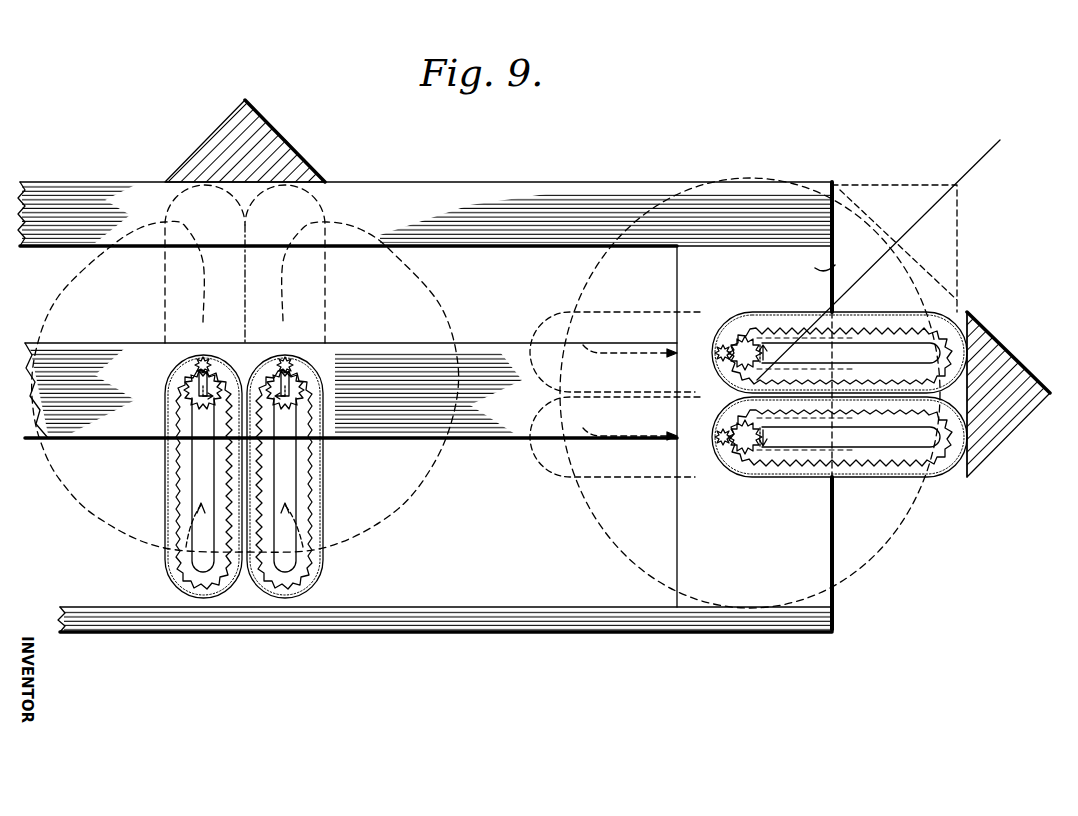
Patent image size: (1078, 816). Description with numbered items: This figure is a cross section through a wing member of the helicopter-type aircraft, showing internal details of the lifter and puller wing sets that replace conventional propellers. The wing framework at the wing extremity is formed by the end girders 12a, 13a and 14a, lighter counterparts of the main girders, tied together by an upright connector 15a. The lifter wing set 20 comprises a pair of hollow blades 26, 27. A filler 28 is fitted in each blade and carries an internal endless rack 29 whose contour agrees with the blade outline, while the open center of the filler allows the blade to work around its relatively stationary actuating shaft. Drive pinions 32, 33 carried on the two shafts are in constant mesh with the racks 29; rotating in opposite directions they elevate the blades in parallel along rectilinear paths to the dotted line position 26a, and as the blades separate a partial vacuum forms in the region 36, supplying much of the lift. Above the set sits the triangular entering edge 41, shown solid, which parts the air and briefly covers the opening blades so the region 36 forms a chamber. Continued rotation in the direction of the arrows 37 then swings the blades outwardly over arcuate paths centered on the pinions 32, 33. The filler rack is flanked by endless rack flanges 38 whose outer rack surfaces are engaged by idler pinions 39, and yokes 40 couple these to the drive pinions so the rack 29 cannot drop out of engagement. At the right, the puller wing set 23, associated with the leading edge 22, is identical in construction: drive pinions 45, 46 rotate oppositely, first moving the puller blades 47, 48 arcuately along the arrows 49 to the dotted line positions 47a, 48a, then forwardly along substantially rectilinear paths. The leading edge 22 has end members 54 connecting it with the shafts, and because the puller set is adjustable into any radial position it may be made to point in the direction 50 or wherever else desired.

The end girder 12a is at (422, 181).
The end girder 13a is at (464, 343).
The end girder 14a is at (500, 607).
The triangular entering edge 41 is at (262, 130).
The region of partial vacuum 36 is at (302, 160).
The dotted line position of blade 26a is at (172, 294).
The arrows 37 is at (58, 297).
The hollow blade 27 is at (166, 470).
The hollow blade 26 is at (323, 494).
The filler 28 is at (177, 503).
The endless rack flanges 38 is at (188, 524).
The lifter wing set 20 is at (331, 466).
The drive pinion 33 is at (188, 389).
The drive pinion 32 is at (302, 389).
The idler pinions 39 is at (199, 366).
The yokes 40 is at (198, 372).
The internal endless rack 29 is at (190, 400).
The puller blade 48 is at (867, 307).
The puller blade 47 is at (884, 479).
The drive pinion 46 is at (760, 353).
The drive pinion 45 is at (760, 437).
The leading edge 22 is at (990, 339).
The end members 54 is at (951, 476).
The puller wing set 23 is at (951, 307).
The direction 50 is at (984, 160).
The upright connector 15a is at (843, 263).
The arrows 49 is at (670, 192).
The dotted line position of puller blade 48a is at (543, 323).
The dotted line position of puller blade 47a is at (528, 452).